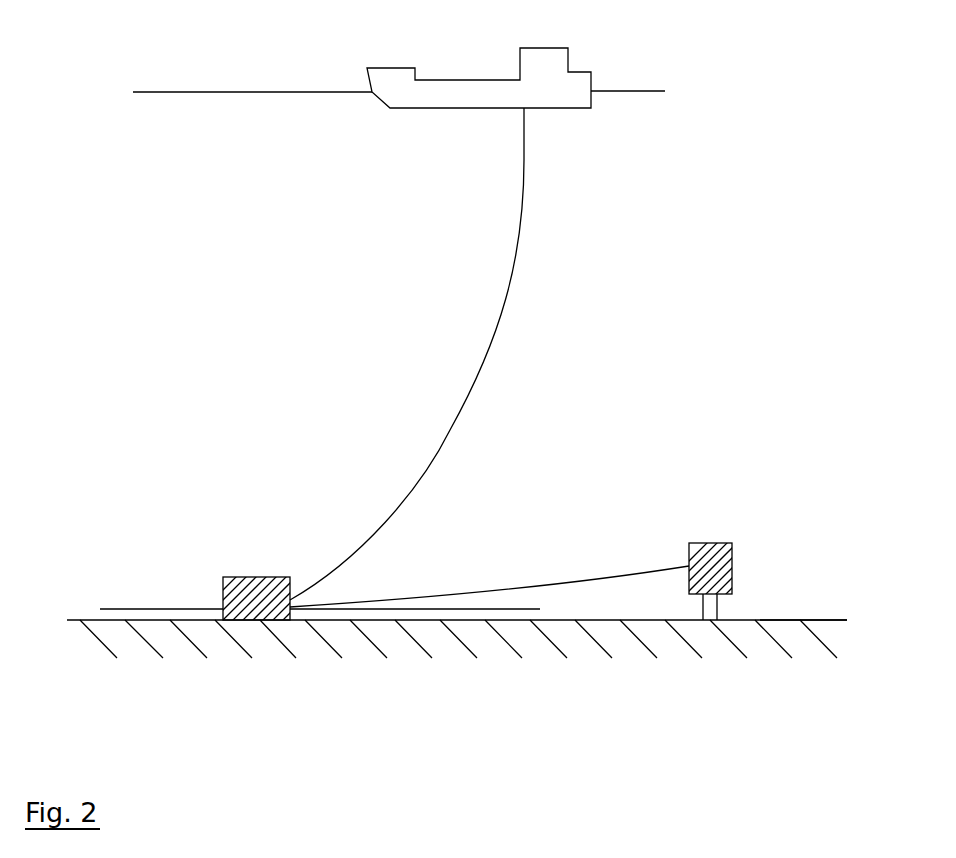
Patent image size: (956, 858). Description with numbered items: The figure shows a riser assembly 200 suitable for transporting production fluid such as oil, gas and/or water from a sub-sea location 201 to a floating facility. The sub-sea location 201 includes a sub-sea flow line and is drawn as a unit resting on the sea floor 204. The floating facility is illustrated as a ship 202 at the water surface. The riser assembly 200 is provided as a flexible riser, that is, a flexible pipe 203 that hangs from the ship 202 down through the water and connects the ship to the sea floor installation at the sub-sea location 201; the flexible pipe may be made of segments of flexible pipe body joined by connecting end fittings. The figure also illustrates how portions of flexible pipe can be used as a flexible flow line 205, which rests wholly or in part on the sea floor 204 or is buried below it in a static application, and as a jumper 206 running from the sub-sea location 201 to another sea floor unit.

The riser assembly 200 is at (617, 227).
The sub-sea location 201 is at (256, 577).
The ship 202 is at (392, 68).
The flexible pipe 203 is at (451, 430).
The sea floor 204 is at (792, 620).
The flexible flow line 205 is at (148, 608).
The jumper 206 is at (637, 566).